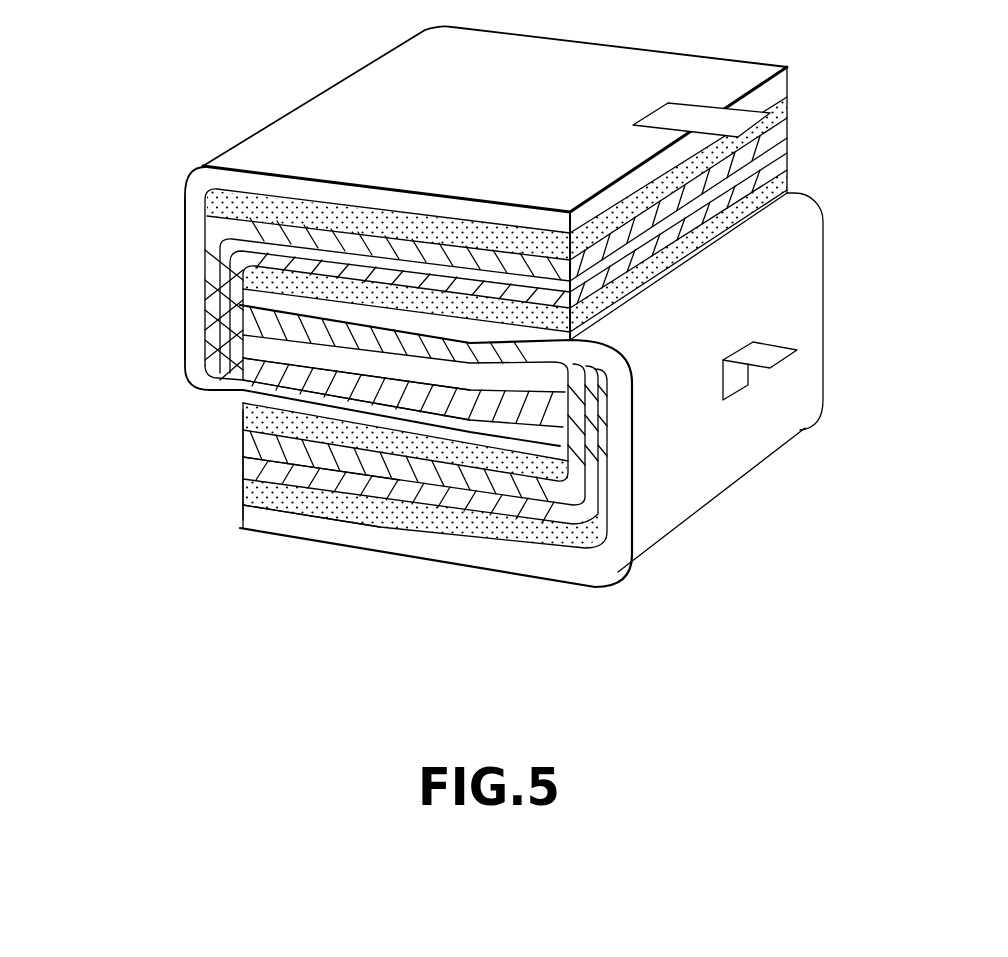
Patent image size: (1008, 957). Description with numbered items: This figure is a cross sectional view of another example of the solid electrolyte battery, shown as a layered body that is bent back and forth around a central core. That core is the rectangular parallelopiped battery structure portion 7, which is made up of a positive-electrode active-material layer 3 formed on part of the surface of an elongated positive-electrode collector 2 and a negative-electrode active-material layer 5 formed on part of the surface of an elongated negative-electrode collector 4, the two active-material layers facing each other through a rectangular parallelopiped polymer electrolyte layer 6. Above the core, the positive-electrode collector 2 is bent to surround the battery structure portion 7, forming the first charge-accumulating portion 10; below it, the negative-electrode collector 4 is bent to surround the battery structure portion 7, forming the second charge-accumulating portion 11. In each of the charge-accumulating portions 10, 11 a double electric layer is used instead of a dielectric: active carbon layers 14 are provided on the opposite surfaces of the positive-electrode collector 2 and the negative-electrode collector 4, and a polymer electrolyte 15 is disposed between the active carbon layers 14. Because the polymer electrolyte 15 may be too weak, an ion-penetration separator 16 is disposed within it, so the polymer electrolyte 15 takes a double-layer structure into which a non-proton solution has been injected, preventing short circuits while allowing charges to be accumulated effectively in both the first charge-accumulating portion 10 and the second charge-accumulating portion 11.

The positive-electrode collector 2 is at (213, 175).
The active carbon layers 14 is at (213, 200).
The polymer electrolyte 15 is at (215, 230).
The ion-penetration separator 16 is at (203, 243).
The negative-electrode collector 4 is at (230, 343).
The first charge-accumulating portion 10 is at (108, 143).
The second charge-accumulating portion 11 is at (108, 415).
The negative-electrode active-material layer 5 is at (615, 380).
The polymer electrolyte layer 6 is at (615, 410).
The positive-electrode active-material layer 3 is at (615, 447).
The battery structure portion 7 is at (867, 423).